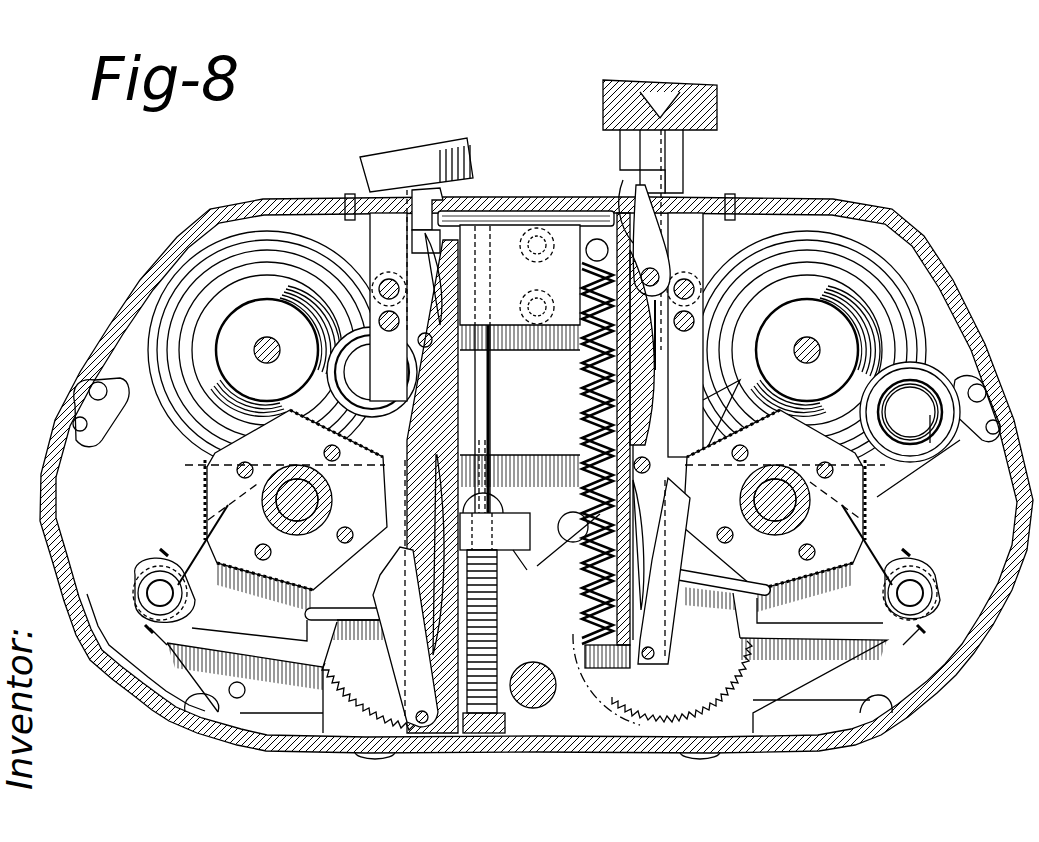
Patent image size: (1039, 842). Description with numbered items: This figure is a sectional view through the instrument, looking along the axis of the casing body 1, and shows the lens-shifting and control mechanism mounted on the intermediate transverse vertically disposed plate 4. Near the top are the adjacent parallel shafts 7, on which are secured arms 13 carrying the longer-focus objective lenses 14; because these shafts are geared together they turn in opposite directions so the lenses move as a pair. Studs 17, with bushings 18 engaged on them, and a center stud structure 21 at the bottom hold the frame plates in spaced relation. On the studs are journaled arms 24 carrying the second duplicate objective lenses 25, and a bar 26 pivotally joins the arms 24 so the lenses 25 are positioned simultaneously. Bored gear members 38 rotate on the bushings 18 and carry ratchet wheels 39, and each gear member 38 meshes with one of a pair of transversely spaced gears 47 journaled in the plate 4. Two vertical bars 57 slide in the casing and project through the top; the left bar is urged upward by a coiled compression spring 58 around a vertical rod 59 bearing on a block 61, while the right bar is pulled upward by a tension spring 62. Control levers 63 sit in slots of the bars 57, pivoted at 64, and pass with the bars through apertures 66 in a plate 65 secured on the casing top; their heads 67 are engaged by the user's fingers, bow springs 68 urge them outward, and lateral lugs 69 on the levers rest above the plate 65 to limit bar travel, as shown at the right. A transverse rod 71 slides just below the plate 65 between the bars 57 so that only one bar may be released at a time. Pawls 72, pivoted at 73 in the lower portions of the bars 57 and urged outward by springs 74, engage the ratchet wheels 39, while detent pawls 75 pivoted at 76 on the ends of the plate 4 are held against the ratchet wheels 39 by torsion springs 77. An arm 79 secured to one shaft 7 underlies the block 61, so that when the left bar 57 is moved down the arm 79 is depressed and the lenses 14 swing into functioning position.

The casing body 1 is at (133, 292).
The intermediate transverse vertically disposed plate 4 is at (190, 538).
The shafts 7 is at (512, 512).
The arms 13 is at (187, 398).
The objective lenses 14 is at (263, 232).
The studs 17 is at (313, 490).
The bushings 18 is at (318, 498).
The center stud structure 21 is at (533, 668).
The arms 24 is at (948, 450).
The objective lenses 25 is at (356, 377).
The bar 26 is at (717, 408).
The gear members 38 is at (208, 490).
The ratchet wheels 39 is at (212, 465).
The gears 47 is at (343, 688).
The bars 57 is at (460, 402).
The coiled compression spring 58 is at (497, 592).
The vertical rod 59 is at (488, 441).
The block 61 is at (530, 522).
The tension spring 62 is at (582, 378).
The control levers 63 is at (463, 186).
The pivot 64 is at (425, 348).
The plate 65 is at (531, 208).
The apertures 66 is at (481, 199).
The heads 67 is at (471, 152).
The bow springs 68 is at (441, 281).
The lateral lugs 69 is at (405, 236).
The rod 71 is at (490, 232).
The pawls 72 is at (417, 655).
The pivot 73 is at (418, 713).
The springs 74 is at (437, 590).
The detent pawls 75 is at (245, 619).
The pivots 76 is at (158, 593).
The torsion springs 77 is at (162, 553).
The arm 79 is at (527, 566).